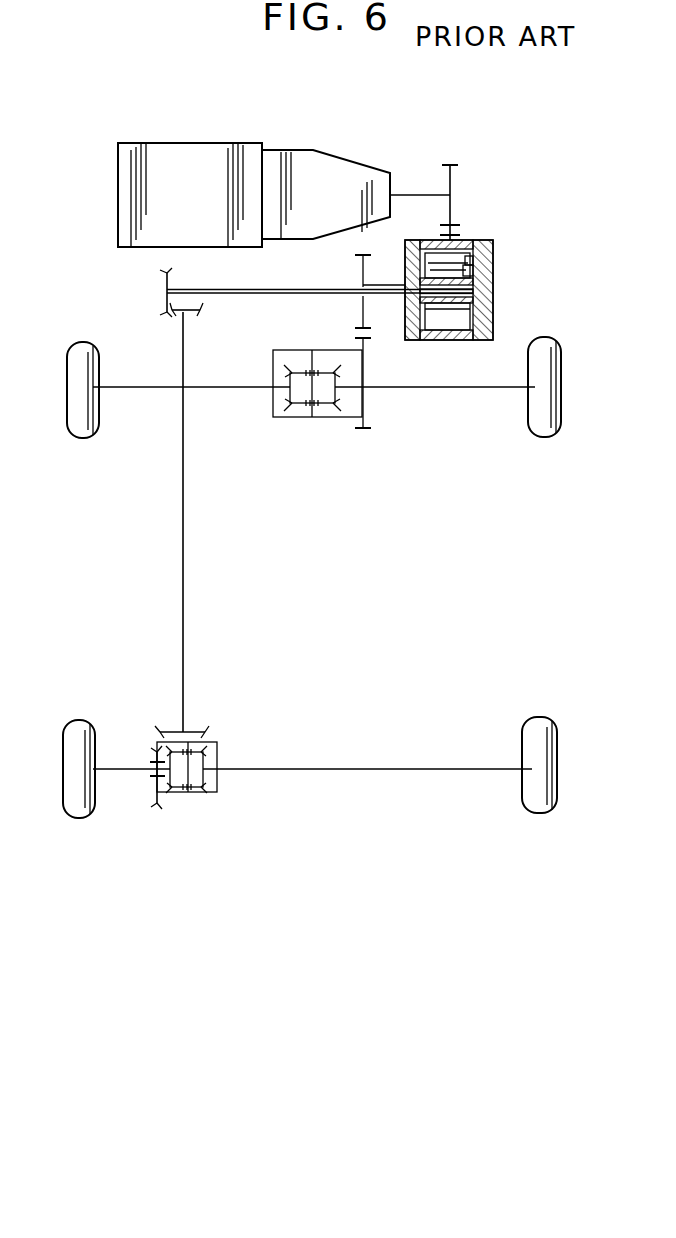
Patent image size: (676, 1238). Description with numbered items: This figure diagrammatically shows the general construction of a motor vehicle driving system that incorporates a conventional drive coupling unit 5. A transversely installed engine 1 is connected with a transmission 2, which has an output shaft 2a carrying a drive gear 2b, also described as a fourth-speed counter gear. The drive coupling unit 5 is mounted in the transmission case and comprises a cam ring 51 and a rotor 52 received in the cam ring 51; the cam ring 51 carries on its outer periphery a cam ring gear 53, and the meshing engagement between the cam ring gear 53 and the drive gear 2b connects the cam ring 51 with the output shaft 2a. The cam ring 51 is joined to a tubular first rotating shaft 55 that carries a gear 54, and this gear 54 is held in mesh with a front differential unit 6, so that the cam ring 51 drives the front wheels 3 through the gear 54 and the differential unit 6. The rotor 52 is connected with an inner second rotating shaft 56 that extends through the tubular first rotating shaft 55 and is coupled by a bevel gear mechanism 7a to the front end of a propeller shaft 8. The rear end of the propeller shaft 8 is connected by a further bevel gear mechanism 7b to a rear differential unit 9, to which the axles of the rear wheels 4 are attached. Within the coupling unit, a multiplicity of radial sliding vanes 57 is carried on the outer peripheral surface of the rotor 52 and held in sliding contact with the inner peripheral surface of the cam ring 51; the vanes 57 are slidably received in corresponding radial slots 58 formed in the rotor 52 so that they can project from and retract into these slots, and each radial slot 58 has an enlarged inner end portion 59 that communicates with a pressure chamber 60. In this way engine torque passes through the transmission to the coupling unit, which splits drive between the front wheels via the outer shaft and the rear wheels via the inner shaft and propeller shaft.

The engine 1 is at (173, 150).
The transmission 2 is at (315, 165).
The output shaft 2a is at (405, 194).
The drive gear 2b is at (452, 178).
The front wheels 3 is at (85, 440).
The rear wheels 4 is at (80, 820).
The drive coupling unit 5 is at (471, 257).
The differential unit 6 is at (312, 418).
The bevel gear mechanism 7a is at (158, 294).
The bevel gear mechanism 7b is at (148, 742).
The propeller shaft 8 is at (183, 455).
The differential unit 9 is at (217, 758).
The cam ring 51 is at (470, 247).
The rotor 52 is at (420, 280).
The cam ring gear 53 is at (462, 243).
The gear 54 is at (363, 270).
The first rotating shaft 55 is at (383, 300).
The second rotating shaft 56 is at (248, 294).
The radial sliding vanes 57 is at (494, 257).
The radial slots 58 is at (437, 262).
The enlarged inner end portion 59 is at (494, 291).
The pressure chamber 60 is at (494, 270).